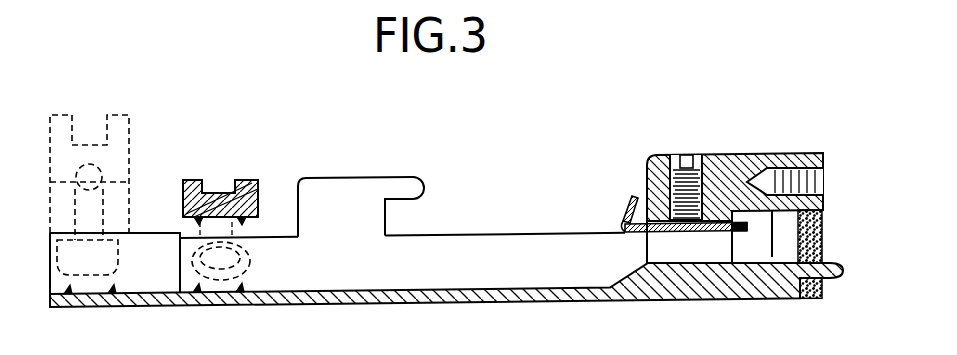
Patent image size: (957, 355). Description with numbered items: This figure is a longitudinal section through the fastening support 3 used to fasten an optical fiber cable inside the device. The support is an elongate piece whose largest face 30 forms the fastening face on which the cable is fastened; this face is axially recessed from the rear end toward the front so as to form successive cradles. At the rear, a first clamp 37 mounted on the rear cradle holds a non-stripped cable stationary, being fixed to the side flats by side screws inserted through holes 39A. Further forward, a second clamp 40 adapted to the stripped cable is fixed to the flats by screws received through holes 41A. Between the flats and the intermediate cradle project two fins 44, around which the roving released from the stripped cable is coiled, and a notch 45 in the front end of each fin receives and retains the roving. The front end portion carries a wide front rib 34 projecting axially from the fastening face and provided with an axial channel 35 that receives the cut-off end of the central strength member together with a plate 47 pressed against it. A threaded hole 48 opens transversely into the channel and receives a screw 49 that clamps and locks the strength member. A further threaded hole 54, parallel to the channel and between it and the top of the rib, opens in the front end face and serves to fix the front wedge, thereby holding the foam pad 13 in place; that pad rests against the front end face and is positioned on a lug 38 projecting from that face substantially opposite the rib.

The fastening support 3 is at (502, 220).
The foam pad 13 is at (818, 285).
The largest face 30 is at (529, 232).
The front rib 34 is at (738, 163).
The axial channel 35 is at (708, 247).
The first clamp 37 is at (128, 141).
The lug 38 is at (843, 265).
The holes 39A is at (103, 218).
The second clamp 40 is at (197, 181).
The holes 41A is at (240, 258).
The fins 44 is at (373, 188).
The notch 45 is at (400, 220).
The plate 47 is at (617, 218).
The threaded hole 48 is at (692, 158).
The screw 49 is at (683, 170).
The threaded hole 54 is at (808, 178).